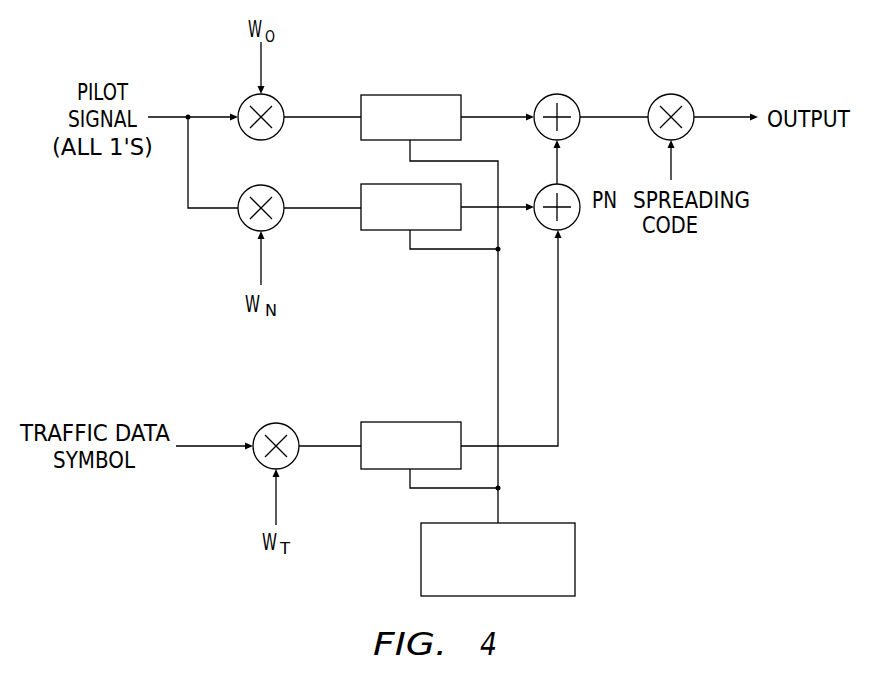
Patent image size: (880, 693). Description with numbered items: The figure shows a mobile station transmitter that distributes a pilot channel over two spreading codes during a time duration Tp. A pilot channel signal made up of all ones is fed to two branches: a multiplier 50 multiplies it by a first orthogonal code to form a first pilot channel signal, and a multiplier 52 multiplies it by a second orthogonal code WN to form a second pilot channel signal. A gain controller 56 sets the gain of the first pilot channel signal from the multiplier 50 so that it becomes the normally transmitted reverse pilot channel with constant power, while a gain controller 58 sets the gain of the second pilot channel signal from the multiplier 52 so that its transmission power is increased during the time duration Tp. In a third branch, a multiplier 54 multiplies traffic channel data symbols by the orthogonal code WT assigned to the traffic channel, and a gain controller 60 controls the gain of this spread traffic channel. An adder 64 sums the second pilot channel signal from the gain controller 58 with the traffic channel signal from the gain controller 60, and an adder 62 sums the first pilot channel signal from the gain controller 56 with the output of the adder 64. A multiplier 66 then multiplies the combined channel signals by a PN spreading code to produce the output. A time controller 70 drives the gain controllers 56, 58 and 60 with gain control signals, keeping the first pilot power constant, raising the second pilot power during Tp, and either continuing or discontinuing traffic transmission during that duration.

The multiplier 50 is at (277, 100).
The multiplier 52 is at (280, 188).
The multiplier 54 is at (285, 423).
The gain controller 56 is at (417, 95).
The gain controller 58 is at (385, 230).
The gain controller 60 is at (420, 422).
The adder 62 is at (574, 101).
The adder 64 is at (575, 190).
The multiplier 66 is at (681, 96).
The time controller 70 is at (553, 523).